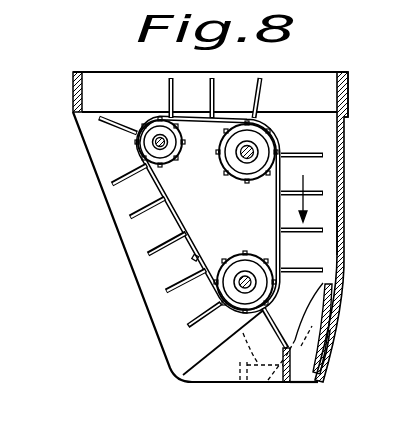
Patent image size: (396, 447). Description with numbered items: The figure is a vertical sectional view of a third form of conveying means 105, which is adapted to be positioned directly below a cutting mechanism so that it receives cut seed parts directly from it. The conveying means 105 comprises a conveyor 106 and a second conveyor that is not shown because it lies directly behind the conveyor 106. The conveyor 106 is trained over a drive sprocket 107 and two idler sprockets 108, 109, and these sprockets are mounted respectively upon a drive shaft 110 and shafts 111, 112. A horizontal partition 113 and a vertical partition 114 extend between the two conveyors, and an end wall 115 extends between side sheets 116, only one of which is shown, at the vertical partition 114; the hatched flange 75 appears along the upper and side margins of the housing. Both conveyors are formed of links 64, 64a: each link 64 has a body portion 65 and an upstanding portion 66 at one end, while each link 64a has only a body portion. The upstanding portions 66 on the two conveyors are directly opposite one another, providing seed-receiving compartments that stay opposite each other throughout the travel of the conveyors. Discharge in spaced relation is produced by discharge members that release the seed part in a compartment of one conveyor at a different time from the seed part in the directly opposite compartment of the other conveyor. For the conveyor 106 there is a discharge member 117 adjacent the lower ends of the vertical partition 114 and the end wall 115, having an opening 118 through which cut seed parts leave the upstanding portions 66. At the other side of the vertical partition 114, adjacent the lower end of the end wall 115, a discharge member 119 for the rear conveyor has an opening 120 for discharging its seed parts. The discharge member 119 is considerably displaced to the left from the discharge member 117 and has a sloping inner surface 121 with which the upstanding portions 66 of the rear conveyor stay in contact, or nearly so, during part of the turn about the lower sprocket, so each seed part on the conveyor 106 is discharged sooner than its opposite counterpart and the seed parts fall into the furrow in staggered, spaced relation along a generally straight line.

The flange 75 is at (72, 91).
The horizontal partition 113 is at (290, 86).
The conveying means 105 is at (344, 166).
The end wall 115 is at (344, 243).
The discharge member 117 is at (326, 357).
The opening 118 is at (328, 342).
The side sheet 116 is at (142, 286).
The discharge member 119 is at (293, 374).
The conveyor 106 is at (180, 221).
The link 64 is at (189, 245).
The link 64a is at (198, 260).
The body portion 65 is at (183, 252).
The upstanding portion 66 is at (151, 208).
The vertical partition 114 is at (318, 236).
The idler sprocket 108 is at (167, 160).
The shaft 111 is at (160, 134).
The drive sprocket 107 is at (240, 178).
The drive shaft 110 is at (238, 150).
The shaft 112 is at (222, 298).
The idler sprocket 109 is at (256, 255).
The opening 120 is at (244, 327).
The sloping inner surface 121 is at (265, 345).